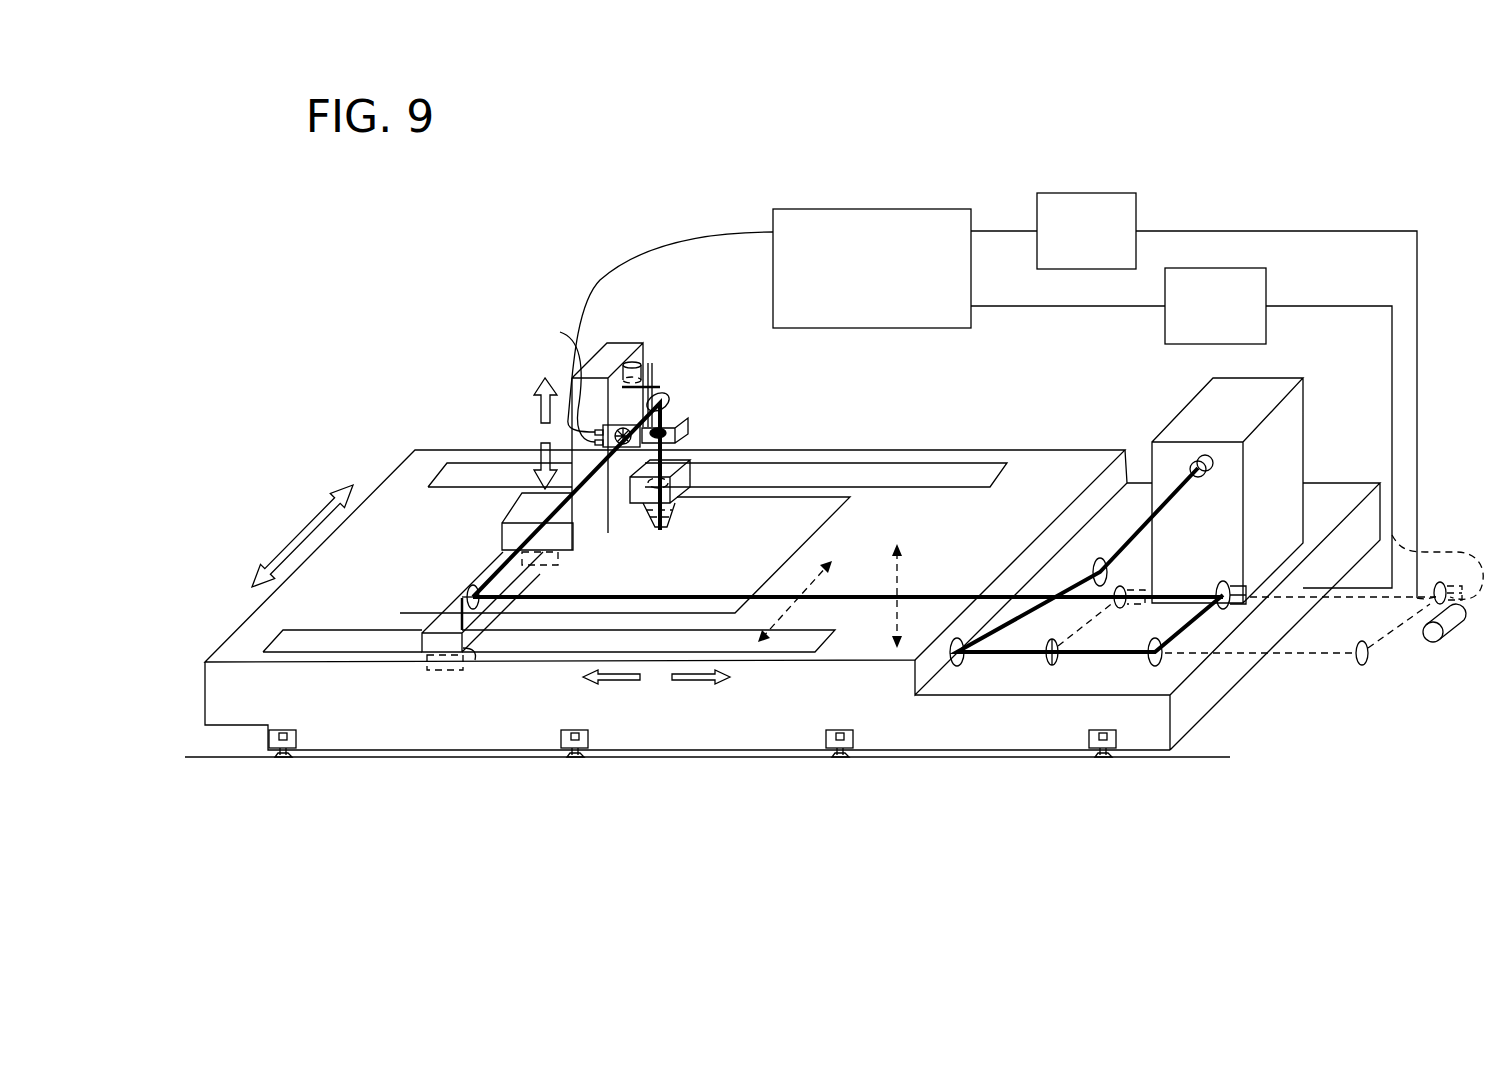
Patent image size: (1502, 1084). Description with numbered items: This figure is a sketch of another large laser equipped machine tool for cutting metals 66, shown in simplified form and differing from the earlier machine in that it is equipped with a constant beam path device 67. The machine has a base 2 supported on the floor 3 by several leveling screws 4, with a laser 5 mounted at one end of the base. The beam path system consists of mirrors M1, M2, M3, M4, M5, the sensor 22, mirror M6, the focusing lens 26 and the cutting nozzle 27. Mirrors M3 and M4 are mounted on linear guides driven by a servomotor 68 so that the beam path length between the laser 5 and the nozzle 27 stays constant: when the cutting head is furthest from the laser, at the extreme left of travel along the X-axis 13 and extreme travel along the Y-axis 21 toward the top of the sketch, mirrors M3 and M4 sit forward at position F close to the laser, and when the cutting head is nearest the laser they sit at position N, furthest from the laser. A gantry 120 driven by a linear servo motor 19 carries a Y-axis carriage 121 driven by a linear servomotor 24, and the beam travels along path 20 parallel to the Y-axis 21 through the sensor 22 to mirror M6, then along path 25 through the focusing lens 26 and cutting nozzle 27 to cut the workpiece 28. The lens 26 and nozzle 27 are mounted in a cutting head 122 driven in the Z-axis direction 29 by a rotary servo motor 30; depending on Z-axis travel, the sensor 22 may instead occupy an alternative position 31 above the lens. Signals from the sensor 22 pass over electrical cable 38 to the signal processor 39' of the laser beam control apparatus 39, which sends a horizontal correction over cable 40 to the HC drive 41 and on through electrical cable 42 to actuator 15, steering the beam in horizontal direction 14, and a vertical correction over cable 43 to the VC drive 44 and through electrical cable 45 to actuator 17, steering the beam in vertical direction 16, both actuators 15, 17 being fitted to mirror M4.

The base 2 is at (320, 708).
The floor 3 is at (945, 801).
The leveling screws 4 is at (268, 742).
The laser 5 is at (1268, 469).
The X-axis 13 is at (656, 703).
The horizontal direction 14 is at (770, 620).
The actuator 15 is at (1250, 600).
The vertical direction 16 is at (902, 594).
The actuator 17 is at (1240, 588).
The linear servo motor 19 is at (440, 666).
The path 20 is at (500, 562).
The Y-axis 21 is at (276, 558).
The sensor 22 is at (610, 422).
The linear servomotor 24 is at (560, 560).
The path 25 is at (664, 430).
The focusing lens 26 is at (672, 478).
The cutting nozzle 27 is at (668, 522).
The workpiece 28 is at (716, 588).
The Z-axis direction 29 is at (545, 400).
The rotary servo motor 30 is at (641, 367).
The alternative position 31 is at (688, 428).
The electrical cable 38 is at (560, 332).
The laser beam control apparatus 39 is at (765, 248).
The signal processor 39' is at (670, 328).
The cable 40 is at (995, 230).
The HC drive 41 is at (1137, 205).
The electrical cable 42 is at (1270, 230).
The cable 43 is at (1057, 308).
The VC drive 44 is at (1267, 328).
The electrical cable 45 is at (1320, 306).
The large laser equipped machine tool for cutting metals 66 is at (308, 465).
The constant beam path device 67 is at (1095, 680).
The servomotor 68 is at (1440, 632).
The gantry 120 is at (460, 607).
The Y-axis carriage 121 is at (628, 347).
The cutting head 122 is at (648, 490).
The mirror M1 is at (1092, 568).
The mirror M2 is at (960, 666).
The mirror M3 is at (1157, 666).
The mirror M4 is at (1240, 603).
The mirror M5 is at (472, 650).
The mirror M6 is at (668, 397).
The position F is at (1046, 672).
The position N is at (1352, 672).